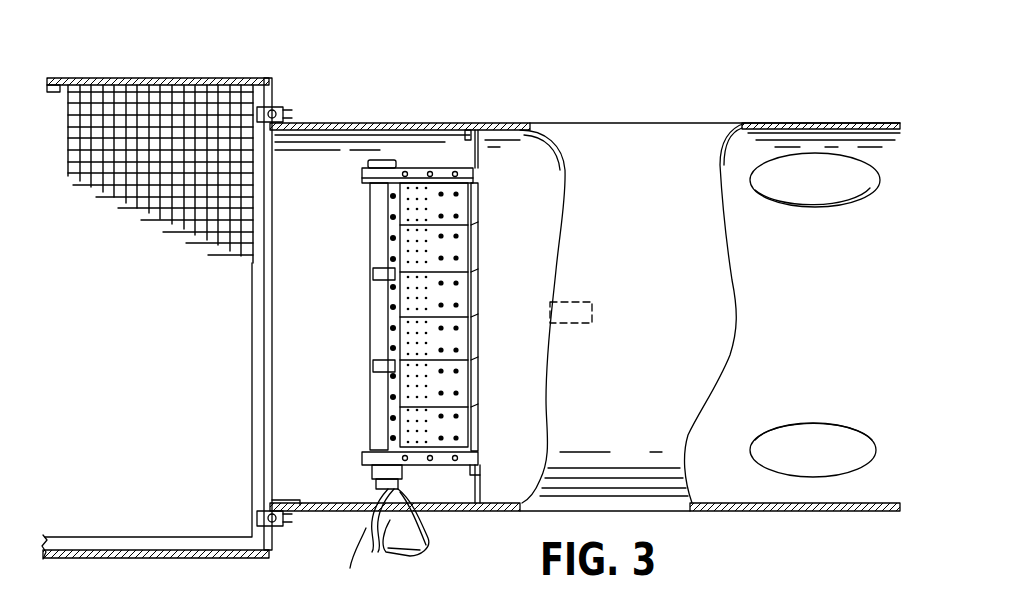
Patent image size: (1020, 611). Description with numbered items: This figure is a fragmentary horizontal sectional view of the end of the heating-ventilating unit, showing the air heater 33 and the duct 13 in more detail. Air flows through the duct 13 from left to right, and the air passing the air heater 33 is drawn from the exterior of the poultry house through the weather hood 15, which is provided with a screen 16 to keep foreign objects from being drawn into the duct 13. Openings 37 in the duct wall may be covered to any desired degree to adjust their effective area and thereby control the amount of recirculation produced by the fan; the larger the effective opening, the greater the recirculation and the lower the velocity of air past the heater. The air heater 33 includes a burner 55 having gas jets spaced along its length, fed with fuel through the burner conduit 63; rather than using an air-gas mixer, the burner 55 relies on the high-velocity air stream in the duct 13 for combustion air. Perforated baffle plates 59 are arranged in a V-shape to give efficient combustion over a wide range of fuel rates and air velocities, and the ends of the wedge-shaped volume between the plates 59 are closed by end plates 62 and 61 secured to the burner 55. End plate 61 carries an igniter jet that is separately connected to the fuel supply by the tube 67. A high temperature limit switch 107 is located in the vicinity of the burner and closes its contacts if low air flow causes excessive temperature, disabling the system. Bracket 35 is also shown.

The duct 13 is at (590, 123).
The weather hood 15 is at (152, 78).
The wire mesh screen 16 is at (229, 100).
The air heater 33 is at (338, 216).
The mounting bracket 35 is at (480, 486).
The openings 37 is at (828, 180).
The burner 55 is at (366, 357).
The perforated baffle plates 59 is at (481, 303).
The end plate 61 is at (430, 465).
The end plate 62 is at (438, 170).
The burner conduit 63 is at (394, 558).
The tube 67 is at (430, 530).
The high temperature limit switch 107 is at (567, 324).